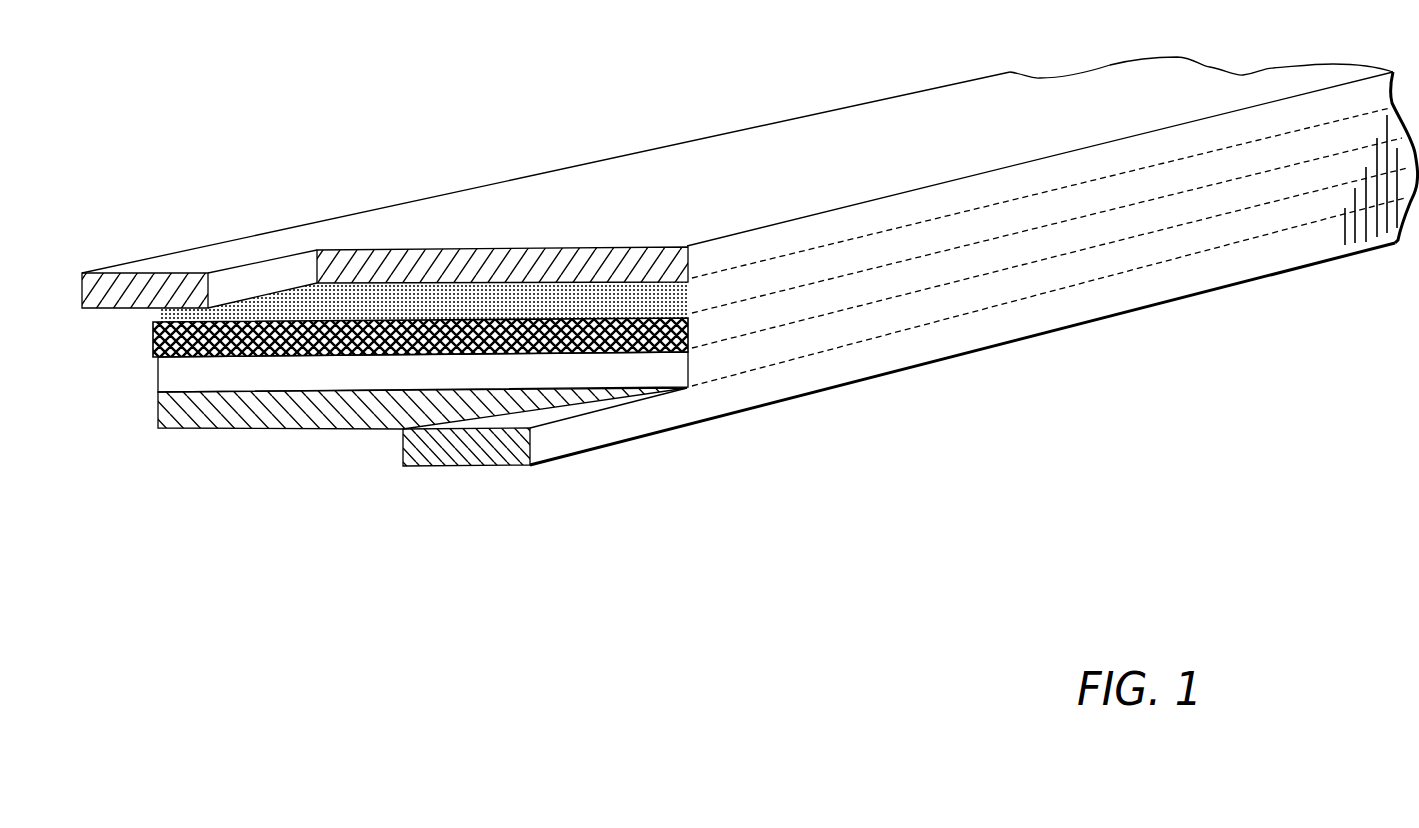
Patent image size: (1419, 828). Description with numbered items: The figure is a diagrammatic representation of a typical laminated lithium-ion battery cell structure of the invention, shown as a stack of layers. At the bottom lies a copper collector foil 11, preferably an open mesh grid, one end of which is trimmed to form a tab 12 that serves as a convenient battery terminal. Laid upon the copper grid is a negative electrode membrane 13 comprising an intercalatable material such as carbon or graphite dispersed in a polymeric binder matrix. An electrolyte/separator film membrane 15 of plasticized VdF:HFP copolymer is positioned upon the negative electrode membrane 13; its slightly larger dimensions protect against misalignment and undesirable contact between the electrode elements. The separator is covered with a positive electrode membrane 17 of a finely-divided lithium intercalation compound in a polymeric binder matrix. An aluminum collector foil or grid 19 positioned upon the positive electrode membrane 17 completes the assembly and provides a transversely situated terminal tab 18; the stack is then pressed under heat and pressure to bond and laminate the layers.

The copper collector foil 11 is at (307, 417).
The tab 12 is at (528, 416).
The negative electrode membrane 13 is at (227, 375).
The electrolyte/separator film membrane 15 is at (707, 328).
The positive electrode membrane 17 is at (850, 255).
The terminal tab 18 is at (180, 258).
The aluminum collector foil or grid 19 is at (543, 192).